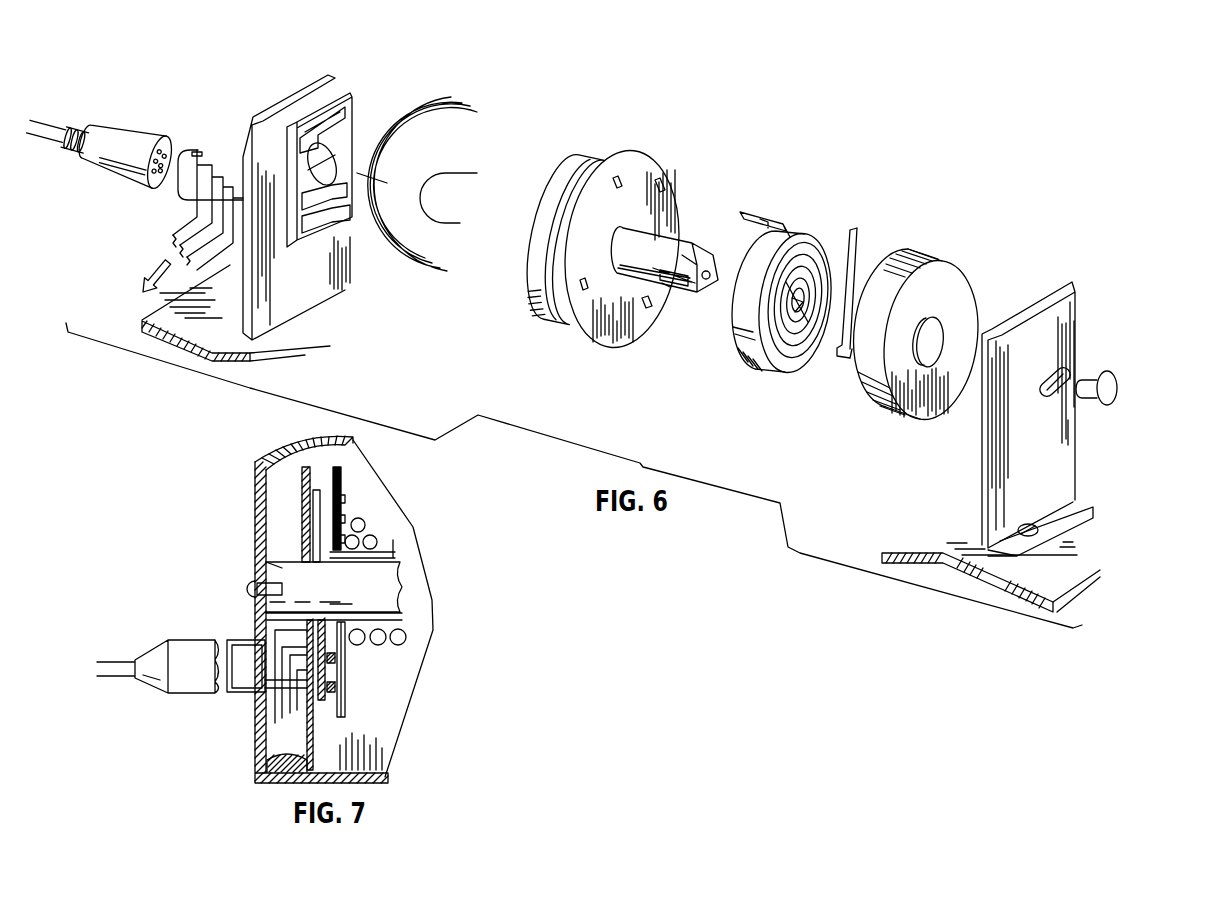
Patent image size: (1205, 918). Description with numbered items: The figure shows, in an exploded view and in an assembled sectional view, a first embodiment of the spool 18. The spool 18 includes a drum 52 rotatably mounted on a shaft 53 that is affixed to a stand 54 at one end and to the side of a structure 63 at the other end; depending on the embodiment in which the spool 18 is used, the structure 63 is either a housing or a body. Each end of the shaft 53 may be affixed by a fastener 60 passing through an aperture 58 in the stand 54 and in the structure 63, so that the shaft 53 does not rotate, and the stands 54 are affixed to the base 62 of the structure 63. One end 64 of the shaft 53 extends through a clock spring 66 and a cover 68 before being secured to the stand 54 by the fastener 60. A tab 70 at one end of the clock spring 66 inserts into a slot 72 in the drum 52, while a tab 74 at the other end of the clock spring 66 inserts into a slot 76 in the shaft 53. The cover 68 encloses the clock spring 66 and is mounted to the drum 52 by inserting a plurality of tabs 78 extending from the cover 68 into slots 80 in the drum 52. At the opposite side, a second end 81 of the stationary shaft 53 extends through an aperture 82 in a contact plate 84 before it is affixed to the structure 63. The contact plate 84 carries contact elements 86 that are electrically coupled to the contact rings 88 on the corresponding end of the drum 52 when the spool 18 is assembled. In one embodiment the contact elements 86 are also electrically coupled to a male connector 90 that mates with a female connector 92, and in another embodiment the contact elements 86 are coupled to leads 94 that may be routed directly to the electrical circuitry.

In FIG. 6, the spool 18 is at (750, 110).
In FIG. 6, the drum 52 is at (580, 163).
In FIG. 7, the drum 52 is at (333, 467).
In FIG. 6, the shaft 53 is at (677, 240).
In FIG. 7, the shaft 53 is at (334, 580).
In FIG. 6, the stand 54 is at (288, 95).
In FIG. 7, the stand 54 is at (300, 510).
In FIG. 6, the aperture 58 is at (320, 150).
In FIG. 7, the aperture 58 is at (260, 582).
In FIG. 6, the fastener 60 is at (1112, 382).
In FIG. 7, the fastener 60 is at (247, 587).
In FIG. 6, the base 62 is at (305, 353).
In FIG. 6, the structure 63 is at (935, 558).
In FIG. 7, the structure 63 is at (262, 750).
In FIG. 6, the one end of the shaft 64 is at (680, 290).
In FIG. 6, the clock spring 66 is at (760, 370).
In FIG. 6, the cover 68 is at (887, 413).
In FIG. 6, the tab 70 is at (760, 213).
In FIG. 6, the slot 72 is at (617, 183).
In FIG. 6, the tab 74 is at (788, 327).
In FIG. 6, the slot 76 is at (663, 287).
In FIG. 6, the tabs 78 is at (857, 232).
In FIG. 6, the slots 80 is at (660, 183).
In FIG. 7, the second end of the shaft 81 is at (282, 572).
In FIG. 6, the aperture 82 is at (330, 153).
In FIG. 6, the contact plate 84 is at (293, 240).
In FIG. 6, the contact elements 86 is at (350, 93).
In FIG. 7, the contact elements 86 is at (337, 493).
In FIG. 7, the contact rings 88 is at (337, 540).
In FIG. 6, the male connector 90 is at (198, 150).
In FIG. 7, the male connector 90 is at (240, 650).
In FIG. 6, the female connector 92 is at (142, 130).
In FIG. 7, the female connector 92 is at (173, 647).
In FIG. 6, the leads 94 is at (183, 225).
In FIG. 7, the leads 94 is at (275, 708).